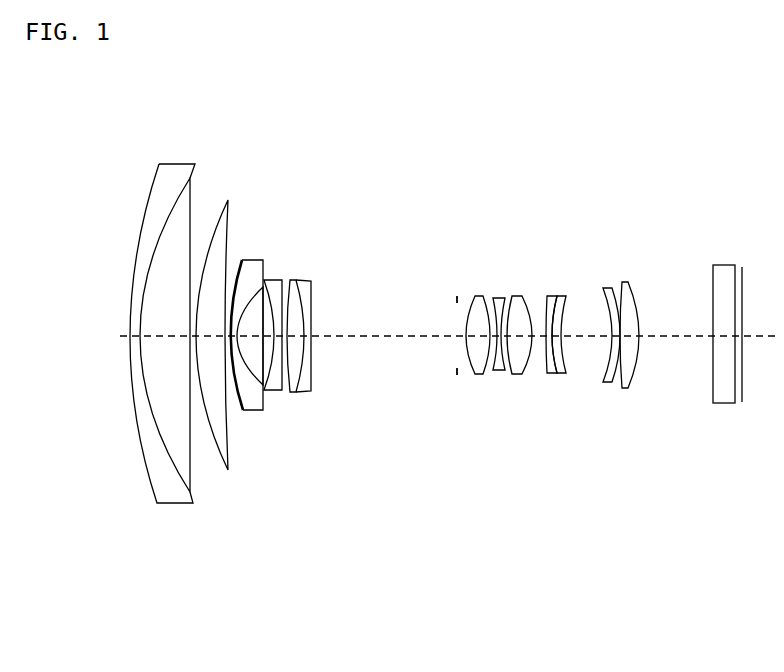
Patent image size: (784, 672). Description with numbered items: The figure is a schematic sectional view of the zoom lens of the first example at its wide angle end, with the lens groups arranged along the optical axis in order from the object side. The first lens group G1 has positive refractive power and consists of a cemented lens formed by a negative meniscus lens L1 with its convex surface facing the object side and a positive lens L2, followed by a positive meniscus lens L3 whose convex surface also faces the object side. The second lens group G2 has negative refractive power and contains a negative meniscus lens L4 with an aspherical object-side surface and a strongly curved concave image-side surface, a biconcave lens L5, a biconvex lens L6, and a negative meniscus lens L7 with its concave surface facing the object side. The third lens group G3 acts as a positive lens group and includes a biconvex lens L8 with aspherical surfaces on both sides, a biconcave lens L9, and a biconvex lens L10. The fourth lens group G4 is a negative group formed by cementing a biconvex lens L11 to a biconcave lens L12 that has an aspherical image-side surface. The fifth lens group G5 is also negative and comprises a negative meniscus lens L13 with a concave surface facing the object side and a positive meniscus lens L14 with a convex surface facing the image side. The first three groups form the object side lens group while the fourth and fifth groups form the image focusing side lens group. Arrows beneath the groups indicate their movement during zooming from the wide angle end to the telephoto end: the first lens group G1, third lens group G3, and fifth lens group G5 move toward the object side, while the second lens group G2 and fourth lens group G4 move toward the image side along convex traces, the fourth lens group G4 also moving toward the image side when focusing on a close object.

The first lens group G1 is at (95, 604).
The second lens group G2 is at (267, 596).
The third lens group G3 is at (362, 600).
The fourth lens group G4 is at (443, 597).
The fifth lens group G5 is at (490, 600).
The meniscus lens L1 is at (162, 324).
The lens L2 is at (169, 319).
The meniscus lens L3 is at (212, 308).
The meniscus lens L4 is at (245, 325).
The biconcave lens L5 is at (253, 313).
The biconvex lens L6 is at (279, 315).
The meniscus lens L7 is at (299, 316).
The biconvex lens L8 is at (474, 307).
The biconcave lens L9 is at (492, 305).
The biconvex lens L10 is at (516, 307).
The biconvex lens L11 is at (552, 307).
The biconcave lens L12 is at (569, 307).
The meniscus lens L13 is at (605, 311).
The meniscus lens L14 is at (634, 314).